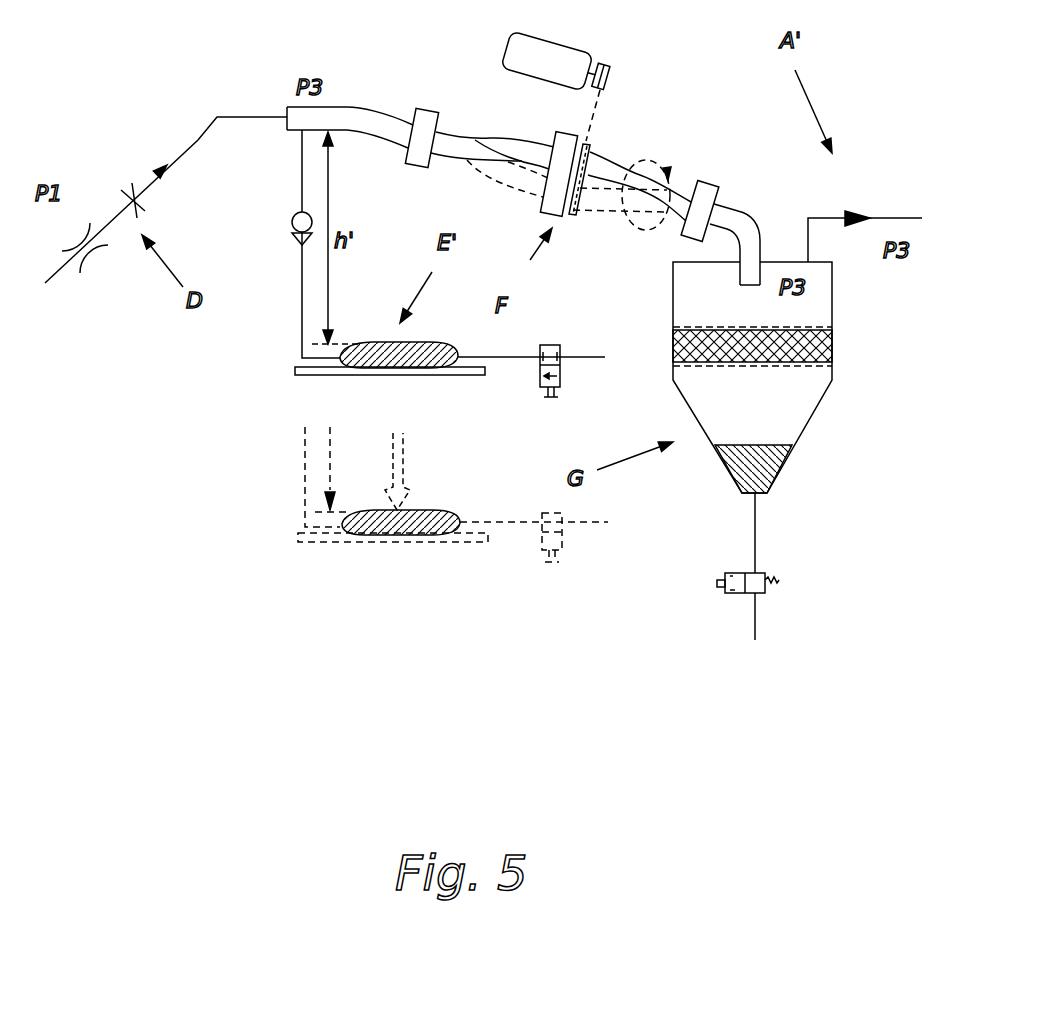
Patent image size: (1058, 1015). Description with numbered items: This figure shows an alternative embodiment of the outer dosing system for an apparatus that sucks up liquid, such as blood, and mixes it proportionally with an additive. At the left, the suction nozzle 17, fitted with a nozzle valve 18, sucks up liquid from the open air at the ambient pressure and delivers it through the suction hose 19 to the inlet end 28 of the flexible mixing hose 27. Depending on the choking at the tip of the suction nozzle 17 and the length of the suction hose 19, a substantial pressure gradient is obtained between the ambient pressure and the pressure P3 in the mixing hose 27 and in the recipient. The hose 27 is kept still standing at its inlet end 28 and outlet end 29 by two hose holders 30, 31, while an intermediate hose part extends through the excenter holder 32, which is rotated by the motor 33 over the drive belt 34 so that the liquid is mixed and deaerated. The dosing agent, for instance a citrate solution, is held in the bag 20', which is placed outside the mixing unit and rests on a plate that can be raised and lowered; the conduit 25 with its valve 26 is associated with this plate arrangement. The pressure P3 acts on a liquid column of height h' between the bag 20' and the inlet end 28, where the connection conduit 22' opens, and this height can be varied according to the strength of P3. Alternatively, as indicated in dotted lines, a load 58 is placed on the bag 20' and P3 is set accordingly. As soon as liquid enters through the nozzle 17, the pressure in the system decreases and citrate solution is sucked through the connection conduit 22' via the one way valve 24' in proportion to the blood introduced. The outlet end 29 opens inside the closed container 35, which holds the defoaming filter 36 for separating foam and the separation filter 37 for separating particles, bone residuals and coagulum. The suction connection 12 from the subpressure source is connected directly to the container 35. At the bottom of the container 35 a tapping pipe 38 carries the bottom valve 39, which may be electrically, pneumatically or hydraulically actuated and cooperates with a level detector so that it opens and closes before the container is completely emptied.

The suction connection 12 is at (885, 212).
The suction nozzle 17 is at (57, 278).
The nozzle valve 18 is at (87, 257).
The suction hose 19 is at (198, 140).
The bag 20' is at (390, 386).
The connection conduit 22' is at (277, 244).
The one way valve 24' is at (258, 242).
The conduit 25 is at (582, 352).
The valve 26 is at (552, 343).
The hose 27 is at (515, 148).
The inlet end 28 is at (313, 117).
The outlet end 29 is at (742, 227).
The hose holder 30 is at (420, 148).
The hose holder 31 is at (693, 222).
The excenter holder 32 is at (560, 177).
The motor 33 is at (556, 63).
The drive belt 34 is at (593, 128).
The container 35 is at (815, 413).
The defoaming filter 36 is at (803, 347).
The separation filter 37 is at (793, 327).
The tapping pipe 38 is at (757, 518).
The bottom valve 39 is at (765, 588).
The load 58 is at (407, 465).